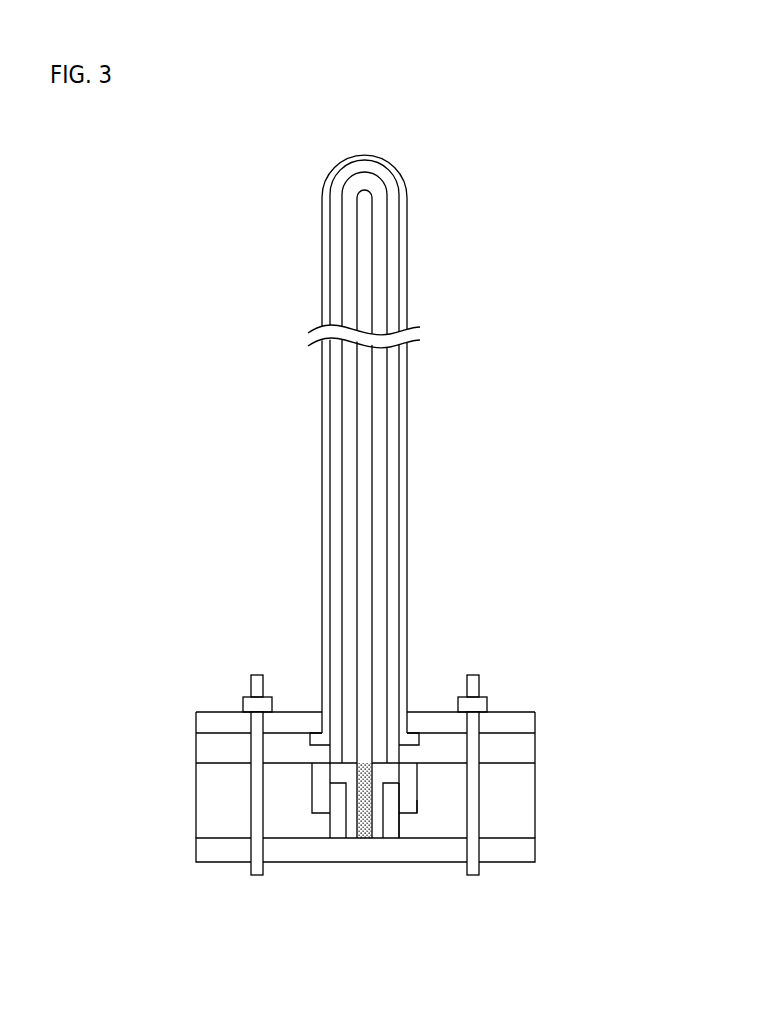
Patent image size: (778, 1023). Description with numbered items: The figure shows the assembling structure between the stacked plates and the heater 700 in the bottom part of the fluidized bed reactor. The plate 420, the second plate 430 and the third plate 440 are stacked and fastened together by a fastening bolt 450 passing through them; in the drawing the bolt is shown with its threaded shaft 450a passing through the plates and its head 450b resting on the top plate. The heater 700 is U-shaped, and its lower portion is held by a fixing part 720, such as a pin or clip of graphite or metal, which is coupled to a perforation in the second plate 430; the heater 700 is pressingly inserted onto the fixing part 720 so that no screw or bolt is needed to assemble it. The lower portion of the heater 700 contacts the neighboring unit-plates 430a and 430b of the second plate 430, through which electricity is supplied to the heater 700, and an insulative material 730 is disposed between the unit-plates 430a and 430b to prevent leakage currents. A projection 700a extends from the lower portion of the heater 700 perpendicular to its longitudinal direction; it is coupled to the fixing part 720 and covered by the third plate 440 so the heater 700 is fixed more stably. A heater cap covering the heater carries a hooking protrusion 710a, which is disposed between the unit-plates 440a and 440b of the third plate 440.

The heater 700 is at (325, 261).
The projection 700a is at (412, 802).
The hooking protrusion 710a is at (320, 737).
The fixing part 720 is at (392, 794).
The insulative material 730 is at (372, 824).
The third plate 440 is at (291, 734).
The unit-plate 440a is at (203, 750).
The unit-plate 440b is at (203, 722).
The fastening bolt 450 is at (460, 775).
The bolt shaft 450a is at (474, 751).
The bolt head 450b is at (482, 706).
The third plate 420 is at (203, 847).
The second plate 430 is at (365, 879).
The unit-plate 430a is at (295, 827).
The unit-plate 430b is at (443, 827).